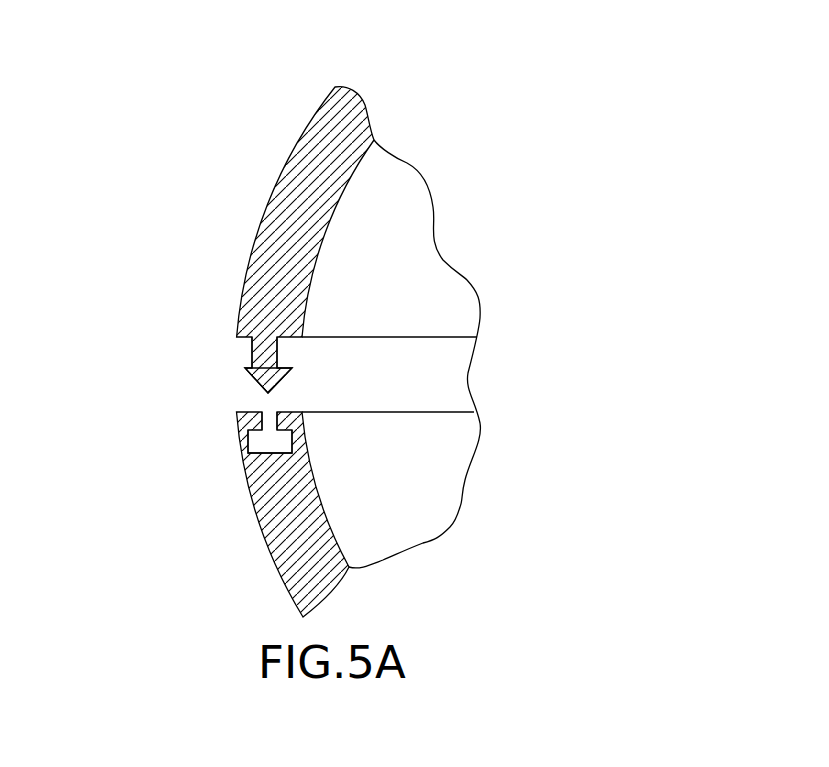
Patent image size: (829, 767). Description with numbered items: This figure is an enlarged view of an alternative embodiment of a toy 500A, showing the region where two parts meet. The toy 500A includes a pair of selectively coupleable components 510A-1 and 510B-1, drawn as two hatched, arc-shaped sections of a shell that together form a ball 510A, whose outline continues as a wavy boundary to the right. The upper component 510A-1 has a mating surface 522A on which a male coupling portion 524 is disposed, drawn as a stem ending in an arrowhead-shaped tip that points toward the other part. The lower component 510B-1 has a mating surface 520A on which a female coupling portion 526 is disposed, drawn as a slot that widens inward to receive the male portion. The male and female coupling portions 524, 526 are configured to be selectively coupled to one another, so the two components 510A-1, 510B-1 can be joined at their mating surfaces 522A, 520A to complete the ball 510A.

The toy 500A is at (438, 100).
The ball 510A is at (537, 222).
The component 510A-1 is at (300, 142).
The component 510B-1 is at (276, 562).
The mating surface 522A is at (250, 339).
The male coupling portion 524 is at (253, 359).
The mating surface 520A is at (248, 411).
The female coupling portion 526 is at (270, 441).